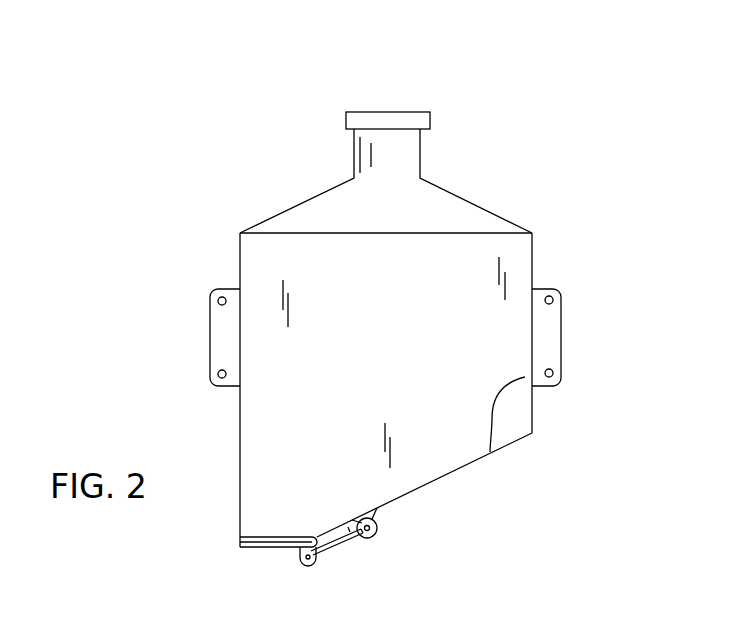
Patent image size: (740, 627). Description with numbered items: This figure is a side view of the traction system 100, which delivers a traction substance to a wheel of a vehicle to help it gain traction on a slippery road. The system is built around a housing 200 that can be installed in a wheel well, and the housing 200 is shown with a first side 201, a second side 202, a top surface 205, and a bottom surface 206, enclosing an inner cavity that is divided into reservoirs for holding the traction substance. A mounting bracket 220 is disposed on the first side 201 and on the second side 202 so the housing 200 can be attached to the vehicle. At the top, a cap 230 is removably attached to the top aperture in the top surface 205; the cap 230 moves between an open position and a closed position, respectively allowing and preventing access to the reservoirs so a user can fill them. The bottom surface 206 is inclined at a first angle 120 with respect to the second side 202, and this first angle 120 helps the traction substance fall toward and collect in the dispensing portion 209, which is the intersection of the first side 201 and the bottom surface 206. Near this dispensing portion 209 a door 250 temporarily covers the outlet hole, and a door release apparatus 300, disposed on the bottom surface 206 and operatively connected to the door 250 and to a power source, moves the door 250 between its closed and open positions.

The traction system 100 is at (244, 164).
The cap 230 is at (389, 110).
The top surface 205 is at (450, 213).
The housing 200 is at (396, 350).
The first side 201 is at (237, 443).
The second side 202 is at (533, 427).
The bottom surface 206 is at (423, 490).
The dispensing portion 209 is at (237, 537).
The door 250 is at (268, 550).
The mounting bracket 220 is at (213, 330).
The first angle 120 is at (486, 414).
The door release apparatus 300 is at (403, 540).